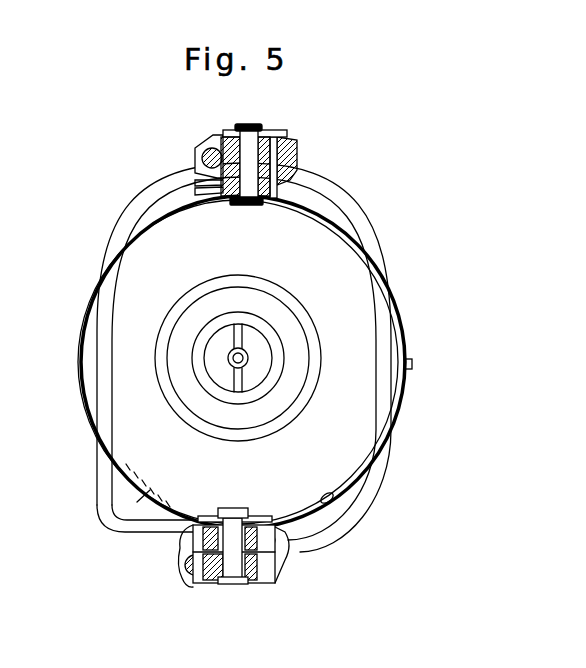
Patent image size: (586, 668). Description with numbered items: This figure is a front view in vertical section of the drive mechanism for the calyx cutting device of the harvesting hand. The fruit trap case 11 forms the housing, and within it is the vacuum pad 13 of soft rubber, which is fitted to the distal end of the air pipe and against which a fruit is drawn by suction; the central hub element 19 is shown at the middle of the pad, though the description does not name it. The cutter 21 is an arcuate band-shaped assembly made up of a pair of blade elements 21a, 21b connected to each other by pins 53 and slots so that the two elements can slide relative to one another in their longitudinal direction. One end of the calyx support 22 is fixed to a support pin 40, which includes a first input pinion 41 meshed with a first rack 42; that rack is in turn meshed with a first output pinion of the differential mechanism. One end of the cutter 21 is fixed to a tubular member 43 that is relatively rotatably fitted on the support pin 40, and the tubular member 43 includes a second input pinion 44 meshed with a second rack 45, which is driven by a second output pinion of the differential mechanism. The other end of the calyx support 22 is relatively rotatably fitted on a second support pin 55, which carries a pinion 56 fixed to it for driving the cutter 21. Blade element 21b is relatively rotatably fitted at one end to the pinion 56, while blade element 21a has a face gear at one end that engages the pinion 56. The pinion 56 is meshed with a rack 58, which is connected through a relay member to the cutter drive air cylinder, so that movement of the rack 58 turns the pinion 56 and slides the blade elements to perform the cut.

The fruit trap case 11 is at (358, 210).
The vacuum pad 13 is at (208, 410).
The lamp hub / bulb socket 19 is at (247, 352).
The cutter 21 is at (281, 373).
The blade element 21a is at (322, 496).
The blade element 21b is at (330, 510).
The calyx support 22 is at (117, 507).
The support pin 40 is at (232, 570).
The first input pinion 41 is at (270, 577).
The first rack 42 is at (189, 580).
The tubular member 43 is at (193, 537).
The second input pinion 44 is at (272, 524).
The second rack 45 is at (278, 545).
The pins 53 is at (412, 363).
The support pin 55 is at (252, 140).
The pinion 56 is at (277, 162).
The rack 58 is at (205, 155).